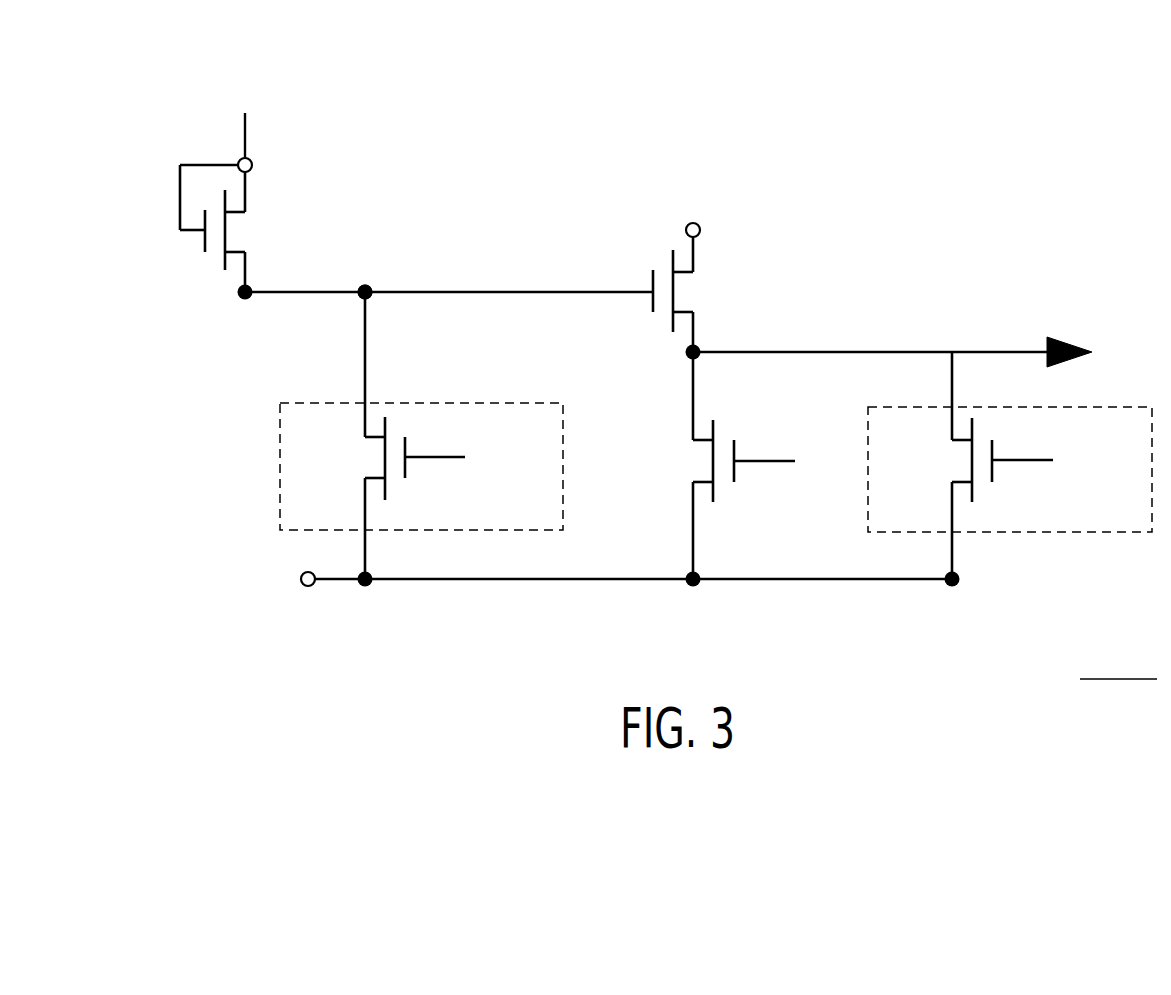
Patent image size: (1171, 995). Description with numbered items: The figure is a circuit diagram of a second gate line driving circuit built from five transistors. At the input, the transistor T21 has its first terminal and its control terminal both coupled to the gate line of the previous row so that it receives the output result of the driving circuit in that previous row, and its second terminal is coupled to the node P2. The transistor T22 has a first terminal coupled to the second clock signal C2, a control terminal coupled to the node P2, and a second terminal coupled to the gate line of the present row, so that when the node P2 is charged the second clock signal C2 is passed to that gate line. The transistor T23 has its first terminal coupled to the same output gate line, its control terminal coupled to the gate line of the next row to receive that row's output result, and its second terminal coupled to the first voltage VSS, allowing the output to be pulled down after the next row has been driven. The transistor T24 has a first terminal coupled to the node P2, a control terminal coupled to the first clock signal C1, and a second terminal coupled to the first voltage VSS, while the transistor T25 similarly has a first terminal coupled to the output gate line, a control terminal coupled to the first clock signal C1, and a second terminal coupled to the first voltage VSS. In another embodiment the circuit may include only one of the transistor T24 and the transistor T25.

The transistor T21 is at (227, 232).
The node P2 is at (367, 285).
The second clock signal C2 is at (694, 222).
The transistor T22 is at (675, 292).
The transistor T23 is at (709, 460).
The transistor T24 is at (381, 457).
The transistor T25 is at (968, 460).
The first clock signal C1 is at (746, 459).
The first voltage VSS is at (300, 579).